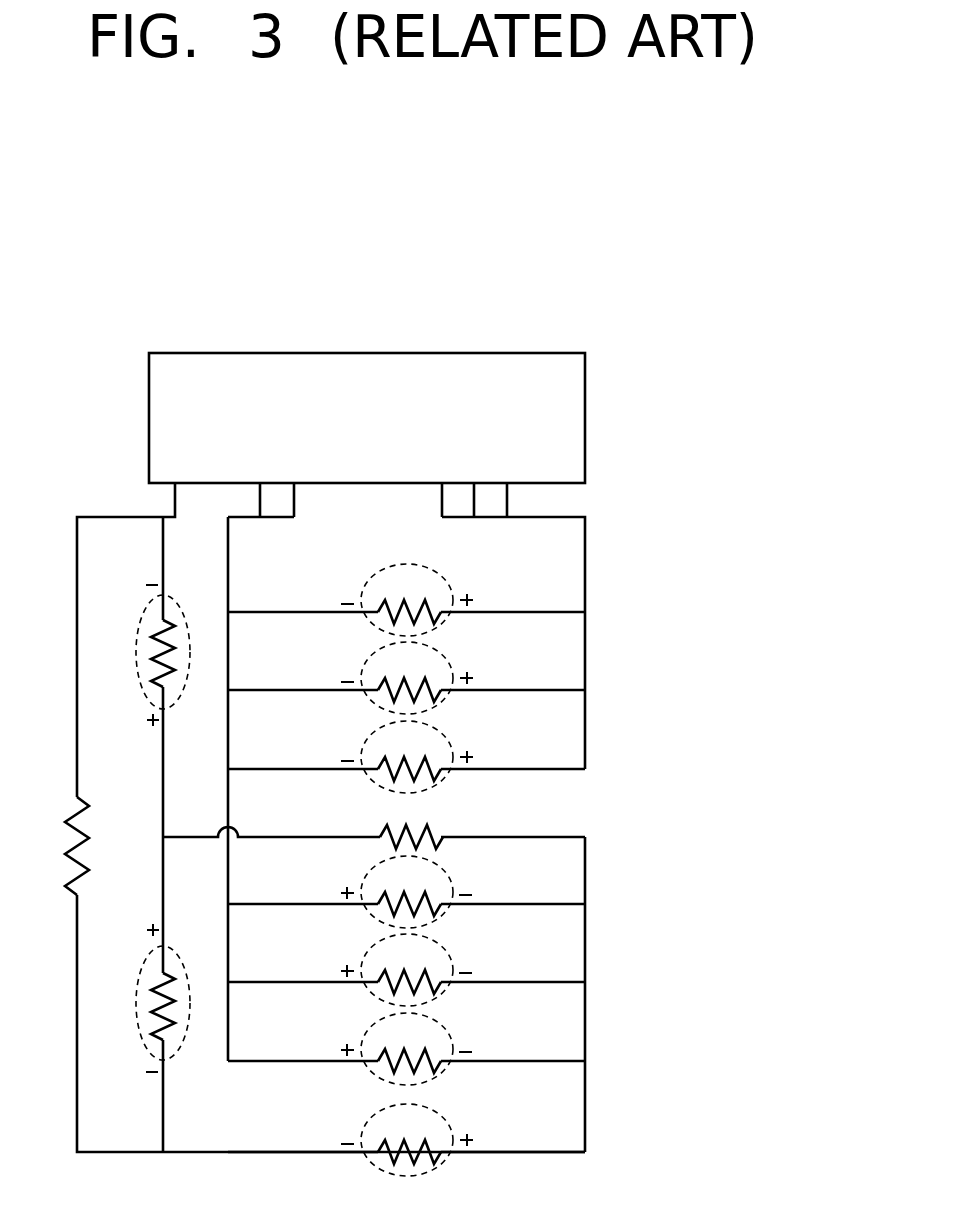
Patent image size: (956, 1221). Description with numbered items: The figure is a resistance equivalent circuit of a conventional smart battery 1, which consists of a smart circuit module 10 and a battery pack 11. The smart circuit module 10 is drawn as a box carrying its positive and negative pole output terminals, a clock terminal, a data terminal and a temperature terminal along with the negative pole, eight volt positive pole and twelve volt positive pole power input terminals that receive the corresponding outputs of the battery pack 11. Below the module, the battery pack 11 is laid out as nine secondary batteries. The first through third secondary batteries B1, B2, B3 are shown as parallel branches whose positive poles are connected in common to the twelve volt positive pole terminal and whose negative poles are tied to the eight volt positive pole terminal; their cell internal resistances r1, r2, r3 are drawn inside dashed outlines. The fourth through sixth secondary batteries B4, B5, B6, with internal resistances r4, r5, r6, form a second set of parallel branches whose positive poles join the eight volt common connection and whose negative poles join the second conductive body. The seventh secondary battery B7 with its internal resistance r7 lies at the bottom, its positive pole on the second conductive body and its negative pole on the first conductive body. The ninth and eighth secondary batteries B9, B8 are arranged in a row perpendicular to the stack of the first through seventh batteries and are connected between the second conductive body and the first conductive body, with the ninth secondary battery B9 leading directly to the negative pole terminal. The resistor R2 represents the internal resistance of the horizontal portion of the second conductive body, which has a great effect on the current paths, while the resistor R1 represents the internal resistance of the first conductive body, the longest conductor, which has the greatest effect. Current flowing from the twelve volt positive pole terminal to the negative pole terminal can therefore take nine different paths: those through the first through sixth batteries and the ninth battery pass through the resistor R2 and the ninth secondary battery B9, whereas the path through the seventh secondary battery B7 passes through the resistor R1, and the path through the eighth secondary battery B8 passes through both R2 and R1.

The smart battery 1 is at (606, 319).
The smart circuit module 10 is at (587, 415).
The battery pack 11 is at (644, 786).
The first secondary battery B1 is at (450, 593).
The second secondary battery B2 is at (450, 671).
The third secondary battery B3 is at (450, 750).
The fourth secondary battery B4 is at (450, 886).
The fifth secondary battery B5 is at (450, 964).
The sixth secondary battery B6 is at (450, 1043).
The seventh secondary battery B7 is at (450, 1134).
The eighth secondary battery B8 is at (178, 1050).
The ninth secondary battery B9 is at (178, 700).
The resistor R1 is at (101, 846).
The resistor R2 is at (411, 823).
The internal resistance r1 is at (409, 600).
The internal resistance r2 is at (409, 678).
The internal resistance r3 is at (409, 757).
The internal resistance r4 is at (409, 892).
The internal resistance r5 is at (409, 970).
The internal resistance r6 is at (409, 1049).
The internal resistance r7 is at (409, 1140).